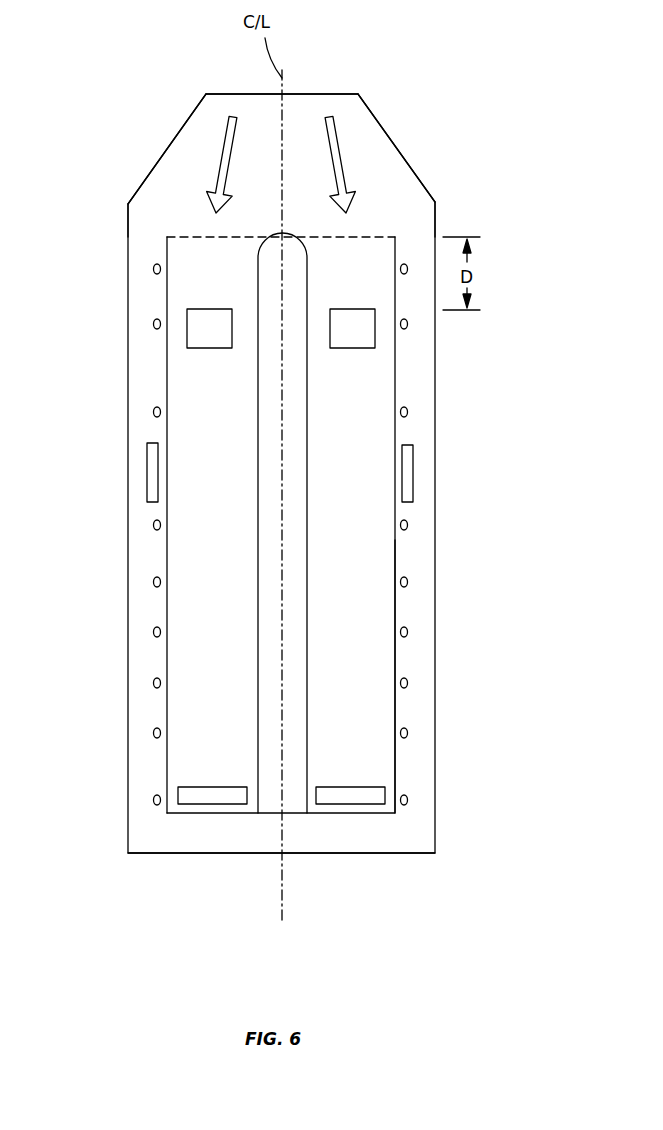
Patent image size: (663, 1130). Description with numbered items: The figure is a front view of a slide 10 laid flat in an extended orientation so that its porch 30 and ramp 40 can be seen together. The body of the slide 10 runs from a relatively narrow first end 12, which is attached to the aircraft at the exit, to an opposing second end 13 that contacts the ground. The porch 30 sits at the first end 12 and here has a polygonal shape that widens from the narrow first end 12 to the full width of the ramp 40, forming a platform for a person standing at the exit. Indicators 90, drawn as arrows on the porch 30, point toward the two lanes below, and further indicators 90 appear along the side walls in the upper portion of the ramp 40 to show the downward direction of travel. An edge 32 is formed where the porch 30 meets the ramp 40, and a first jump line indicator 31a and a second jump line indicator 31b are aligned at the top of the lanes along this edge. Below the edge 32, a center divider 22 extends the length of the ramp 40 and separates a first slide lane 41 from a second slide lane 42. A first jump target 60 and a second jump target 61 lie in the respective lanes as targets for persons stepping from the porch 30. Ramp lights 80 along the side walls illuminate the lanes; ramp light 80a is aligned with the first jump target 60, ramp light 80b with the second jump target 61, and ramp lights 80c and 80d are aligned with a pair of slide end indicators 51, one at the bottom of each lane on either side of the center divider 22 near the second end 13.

The slide 10 is at (160, 104).
The first end 12 is at (310, 93).
The second end 13 is at (377, 853).
The center divider 22 is at (300, 712).
The porch 30 is at (382, 176).
The first jump line indicator 31a is at (380, 235).
The second jump line indicator 31b is at (180, 235).
The edge 32 is at (197, 237).
The ramp 40 is at (365, 450).
The first slide lane 41 is at (360, 565).
The second slide lane 42 is at (200, 560).
The slide end indicator 51 is at (212, 795).
The first jump target 60 is at (352, 330).
The second jump target 61 is at (208, 330).
The ramp lights 80 is at (153, 268).
The ramp light 80a is at (408, 326).
The ramp light 80b is at (153, 323).
The ramp light 80c is at (408, 798).
The ramp light 80d is at (153, 798).
The indicators 90 is at (152, 472).